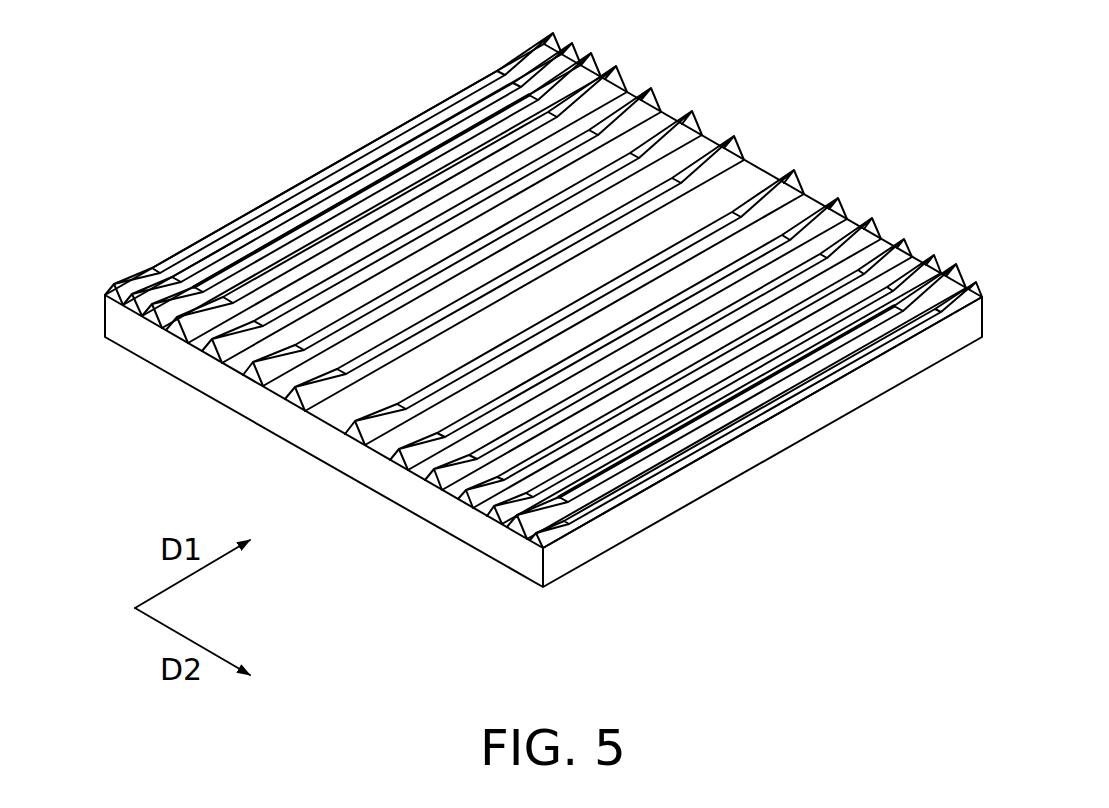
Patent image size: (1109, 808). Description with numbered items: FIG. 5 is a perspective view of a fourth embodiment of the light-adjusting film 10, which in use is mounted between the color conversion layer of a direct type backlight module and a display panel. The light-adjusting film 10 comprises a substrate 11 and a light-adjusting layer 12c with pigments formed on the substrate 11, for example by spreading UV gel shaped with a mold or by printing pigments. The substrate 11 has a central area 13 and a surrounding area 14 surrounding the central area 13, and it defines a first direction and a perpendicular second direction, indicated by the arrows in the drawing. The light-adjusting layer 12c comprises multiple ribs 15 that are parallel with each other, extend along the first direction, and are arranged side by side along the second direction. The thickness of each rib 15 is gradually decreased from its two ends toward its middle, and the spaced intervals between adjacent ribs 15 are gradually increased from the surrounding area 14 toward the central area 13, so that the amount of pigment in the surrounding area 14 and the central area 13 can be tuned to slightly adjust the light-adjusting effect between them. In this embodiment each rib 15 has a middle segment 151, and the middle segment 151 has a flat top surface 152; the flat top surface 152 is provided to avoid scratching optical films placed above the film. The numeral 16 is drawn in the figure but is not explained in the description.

The light-adjusting film 10 is at (523, 310).
The substrate 11 is at (240, 400).
The light-adjusting layer 12c is at (797, 182).
The central area 13 is at (575, 275).
The surrounding area 14 is at (350, 148).
The rib 15 is at (128, 283).
The middle segment 151 is at (613, 496).
The flat top surface 152 is at (703, 437).
The ridge line 16 is at (215, 232).